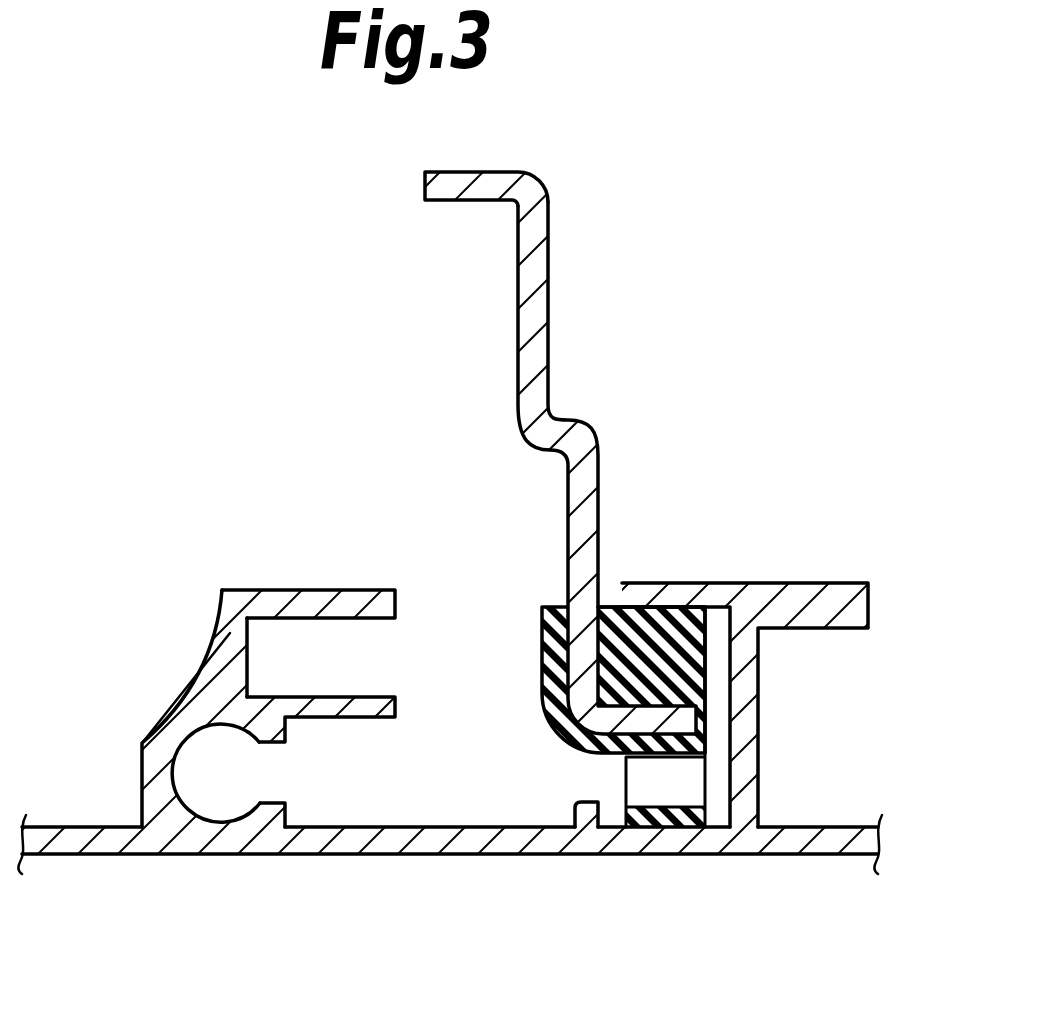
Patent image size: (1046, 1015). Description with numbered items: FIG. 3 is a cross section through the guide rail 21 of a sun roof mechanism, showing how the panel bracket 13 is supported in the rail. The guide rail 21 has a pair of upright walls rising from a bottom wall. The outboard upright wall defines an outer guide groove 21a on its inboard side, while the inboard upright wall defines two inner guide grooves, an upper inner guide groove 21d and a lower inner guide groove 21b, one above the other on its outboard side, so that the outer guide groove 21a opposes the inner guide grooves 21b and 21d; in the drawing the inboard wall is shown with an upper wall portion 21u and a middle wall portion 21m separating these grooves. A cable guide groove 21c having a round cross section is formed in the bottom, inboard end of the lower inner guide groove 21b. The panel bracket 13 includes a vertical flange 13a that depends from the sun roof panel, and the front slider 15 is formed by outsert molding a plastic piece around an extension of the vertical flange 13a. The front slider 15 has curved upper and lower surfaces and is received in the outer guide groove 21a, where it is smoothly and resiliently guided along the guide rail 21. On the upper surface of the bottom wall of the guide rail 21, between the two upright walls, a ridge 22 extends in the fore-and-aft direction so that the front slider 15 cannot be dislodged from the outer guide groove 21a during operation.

The panel bracket 13 is at (523, 437).
The vertical flange 13a is at (548, 260).
The front slider 15 is at (544, 678).
The guide rail 21 is at (523, 525).
The outer guide groove 21a is at (647, 663).
The lower inner guide groove 21b is at (383, 790).
The cable guide groove 21c is at (265, 790).
The upper inner guide groove 21d is at (362, 677).
The middle wall 21m is at (373, 695).
The upper wall 21u is at (318, 597).
The ridge 22 is at (594, 803).